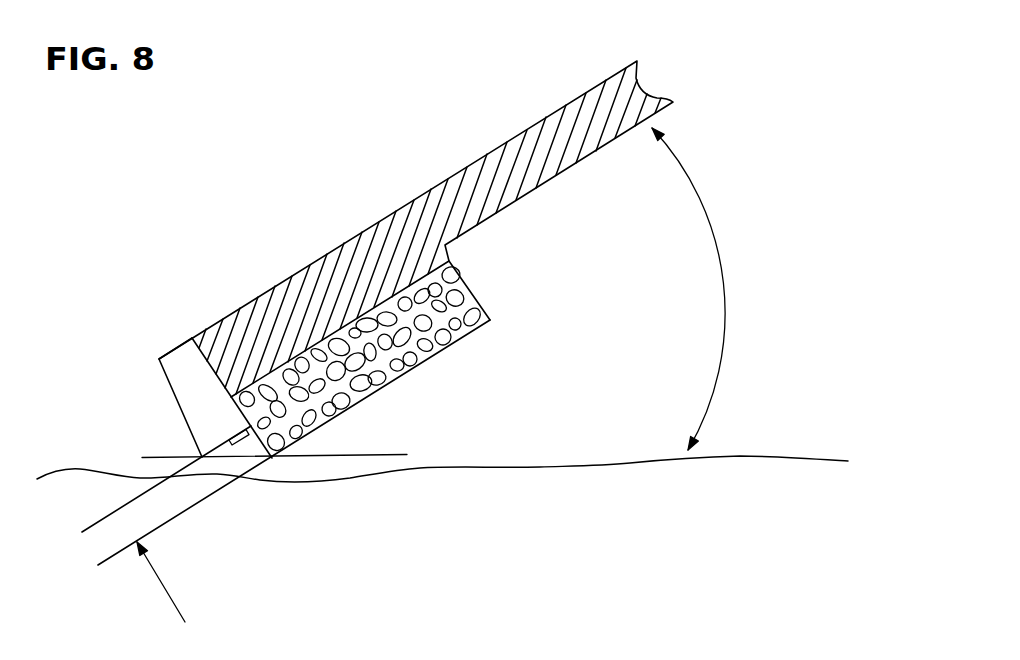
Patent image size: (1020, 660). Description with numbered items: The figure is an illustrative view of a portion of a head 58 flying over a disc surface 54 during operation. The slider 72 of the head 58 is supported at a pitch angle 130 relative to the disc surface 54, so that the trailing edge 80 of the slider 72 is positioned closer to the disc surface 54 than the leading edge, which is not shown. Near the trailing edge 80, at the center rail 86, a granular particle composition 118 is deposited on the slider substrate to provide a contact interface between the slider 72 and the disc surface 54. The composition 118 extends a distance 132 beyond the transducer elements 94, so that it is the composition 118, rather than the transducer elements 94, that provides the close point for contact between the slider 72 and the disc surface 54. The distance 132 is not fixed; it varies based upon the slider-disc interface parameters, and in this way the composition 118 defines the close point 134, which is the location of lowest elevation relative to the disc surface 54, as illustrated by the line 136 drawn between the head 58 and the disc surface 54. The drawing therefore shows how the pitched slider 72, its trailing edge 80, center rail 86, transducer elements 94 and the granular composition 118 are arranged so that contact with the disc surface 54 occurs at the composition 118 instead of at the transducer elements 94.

The disc surface 54 is at (780, 452).
The head 58 is at (416, 245).
The slider 72 is at (350, 238).
The trailing edge 80 is at (208, 362).
The center rail 86 is at (450, 253).
The transducer elements 94 is at (238, 446).
The granular particle composition 118 is at (490, 320).
The pitch angle 130 is at (725, 262).
The distance 132 is at (115, 511).
The close point 134 is at (273, 458).
The line 136 is at (343, 454).